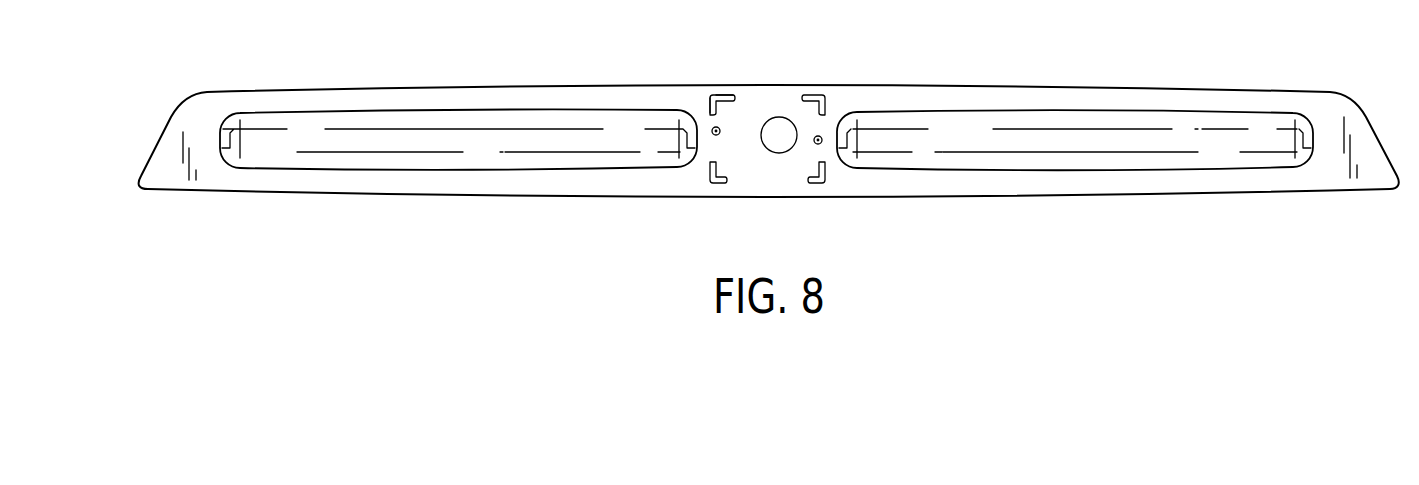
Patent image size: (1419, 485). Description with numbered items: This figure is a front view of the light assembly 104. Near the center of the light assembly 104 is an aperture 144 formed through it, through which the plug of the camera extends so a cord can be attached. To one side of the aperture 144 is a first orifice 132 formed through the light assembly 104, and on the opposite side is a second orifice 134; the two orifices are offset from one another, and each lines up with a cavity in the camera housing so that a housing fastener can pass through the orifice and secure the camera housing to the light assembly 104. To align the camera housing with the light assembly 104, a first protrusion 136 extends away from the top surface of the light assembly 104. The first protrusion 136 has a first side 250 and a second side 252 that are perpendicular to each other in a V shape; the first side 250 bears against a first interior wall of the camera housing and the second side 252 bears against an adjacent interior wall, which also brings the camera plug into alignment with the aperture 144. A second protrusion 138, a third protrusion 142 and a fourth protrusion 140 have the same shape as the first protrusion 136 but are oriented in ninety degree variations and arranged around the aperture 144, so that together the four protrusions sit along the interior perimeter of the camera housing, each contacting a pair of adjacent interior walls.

The light assembly 104 is at (446, 87).
The first orifice 132 is at (719, 134).
The second orifice 134 is at (821, 137).
The first protrusion 136 is at (711, 106).
The second protrusion 138 is at (809, 96).
The fourth protrusion 140 is at (710, 178).
The third protrusion 142 is at (823, 181).
The aperture 144 is at (778, 135).
The first side 250 is at (724, 96).
The second side 252 is at (709, 107).